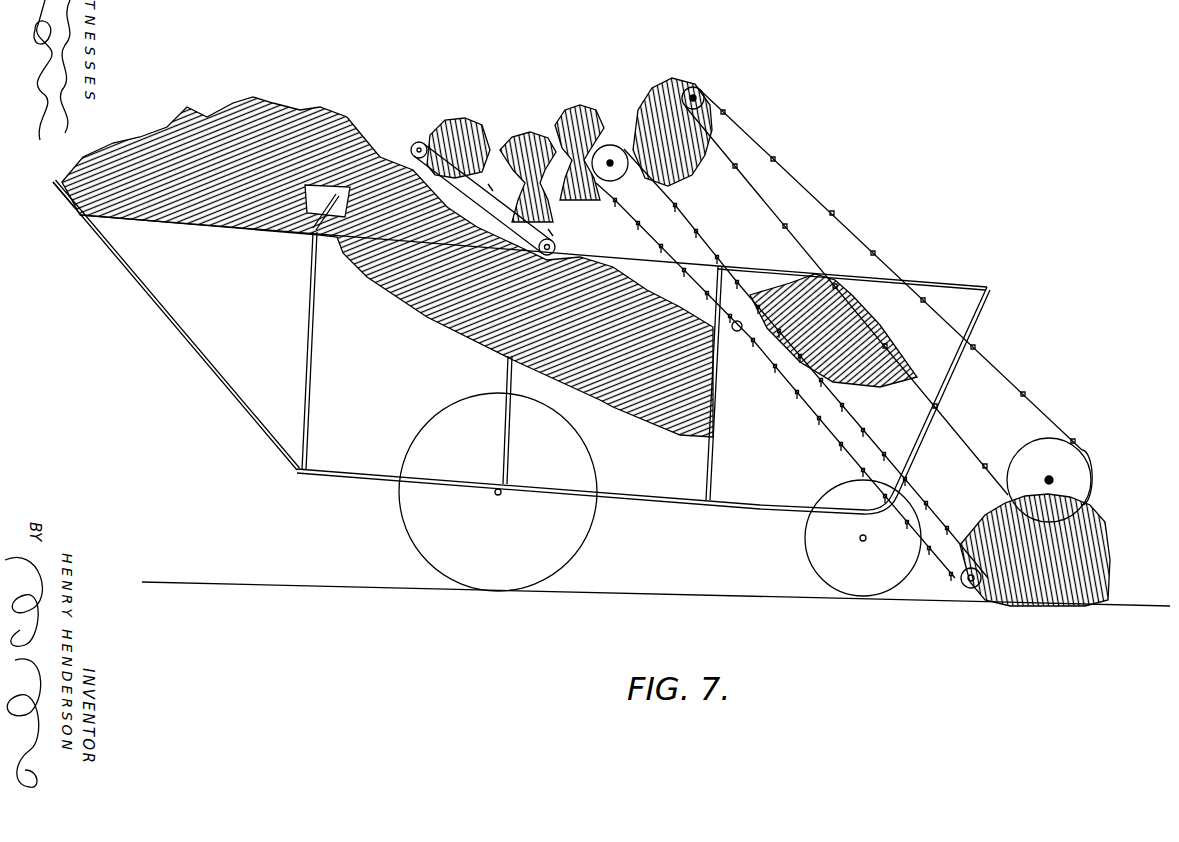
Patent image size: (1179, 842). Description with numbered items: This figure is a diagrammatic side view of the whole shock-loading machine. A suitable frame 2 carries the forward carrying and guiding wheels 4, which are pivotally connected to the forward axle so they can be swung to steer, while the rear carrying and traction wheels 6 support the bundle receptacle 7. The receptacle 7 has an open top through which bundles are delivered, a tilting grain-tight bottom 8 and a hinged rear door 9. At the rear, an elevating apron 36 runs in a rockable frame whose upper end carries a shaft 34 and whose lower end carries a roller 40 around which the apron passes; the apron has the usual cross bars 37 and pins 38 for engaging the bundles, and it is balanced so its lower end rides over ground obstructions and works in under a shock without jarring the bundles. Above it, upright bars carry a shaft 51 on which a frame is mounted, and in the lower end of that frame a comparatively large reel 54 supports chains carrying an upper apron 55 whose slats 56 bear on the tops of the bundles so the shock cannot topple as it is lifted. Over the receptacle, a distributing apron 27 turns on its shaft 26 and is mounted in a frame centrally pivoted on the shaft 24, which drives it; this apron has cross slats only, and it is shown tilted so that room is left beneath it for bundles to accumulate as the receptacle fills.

The frame 2 is at (726, 505).
The forward carrying and guiding wheels 4 is at (808, 570).
The rear carrying and traction wheels 6 is at (406, 525).
The bundle receptacle 7 is at (385, 325).
The tilting grain-tight bottom 8 is at (297, 473).
The hinged rear door 9 is at (53, 188).
The shaft 24 is at (483, 198).
The shaft of the apron 26 is at (415, 147).
The apron 27 is at (540, 224).
The shaft 34 is at (612, 168).
The elevating apron 36 is at (850, 456).
The cross bars 37 is at (821, 419).
The pins 38 is at (796, 393).
The roller 40 is at (969, 591).
The shaft 51 is at (702, 92).
The reel 54 is at (1092, 480).
The apron 55 is at (795, 178).
The slats 56 is at (834, 211).